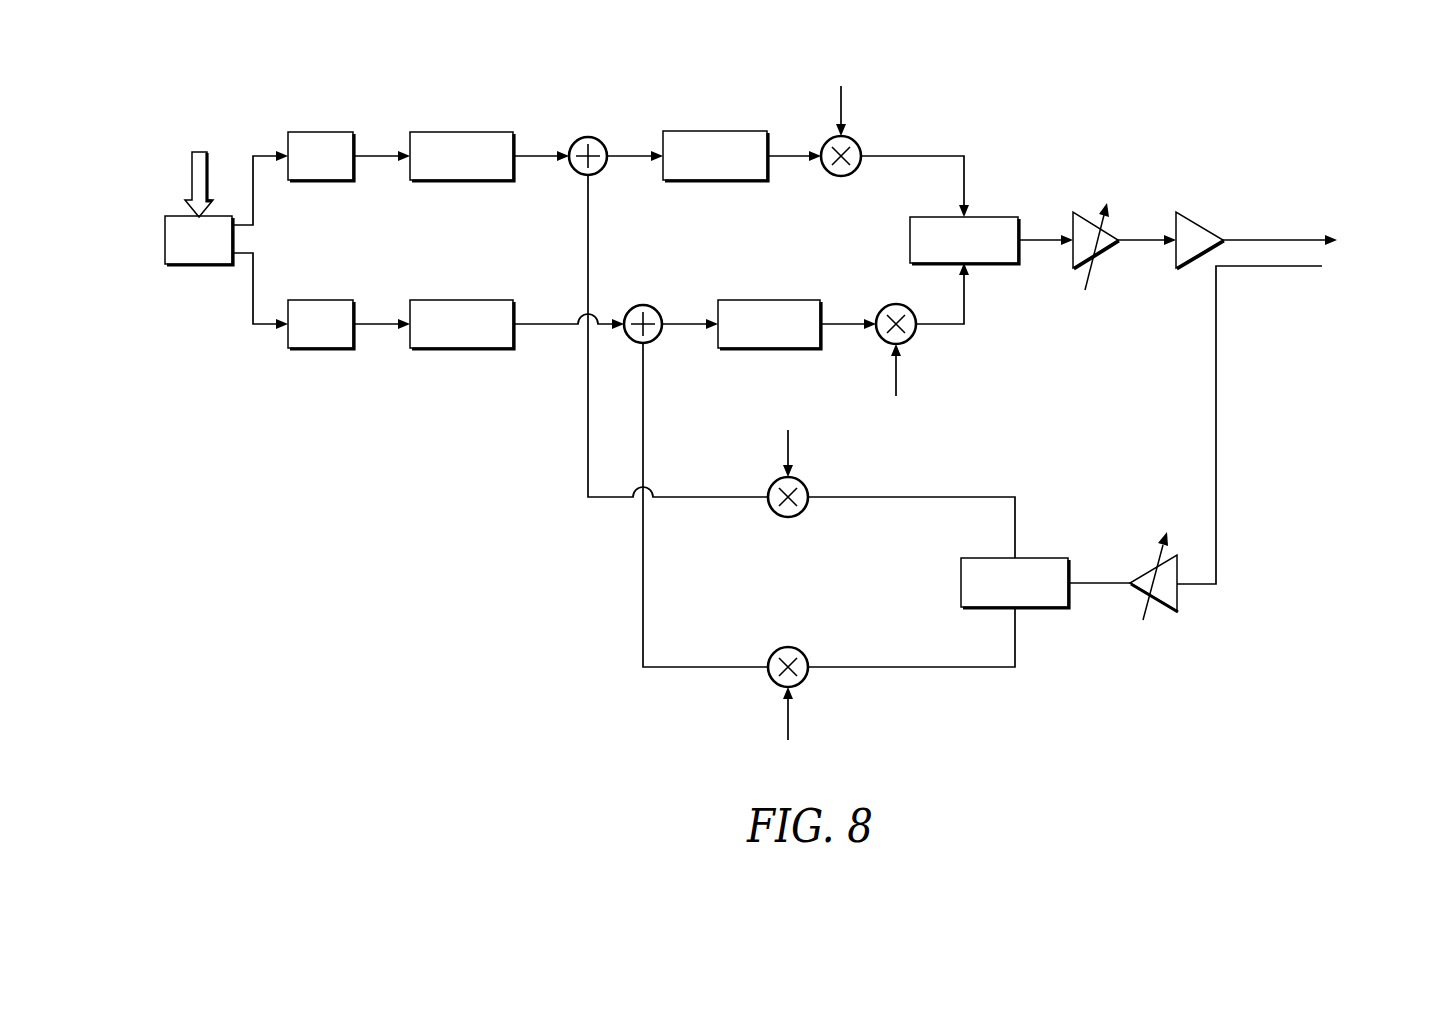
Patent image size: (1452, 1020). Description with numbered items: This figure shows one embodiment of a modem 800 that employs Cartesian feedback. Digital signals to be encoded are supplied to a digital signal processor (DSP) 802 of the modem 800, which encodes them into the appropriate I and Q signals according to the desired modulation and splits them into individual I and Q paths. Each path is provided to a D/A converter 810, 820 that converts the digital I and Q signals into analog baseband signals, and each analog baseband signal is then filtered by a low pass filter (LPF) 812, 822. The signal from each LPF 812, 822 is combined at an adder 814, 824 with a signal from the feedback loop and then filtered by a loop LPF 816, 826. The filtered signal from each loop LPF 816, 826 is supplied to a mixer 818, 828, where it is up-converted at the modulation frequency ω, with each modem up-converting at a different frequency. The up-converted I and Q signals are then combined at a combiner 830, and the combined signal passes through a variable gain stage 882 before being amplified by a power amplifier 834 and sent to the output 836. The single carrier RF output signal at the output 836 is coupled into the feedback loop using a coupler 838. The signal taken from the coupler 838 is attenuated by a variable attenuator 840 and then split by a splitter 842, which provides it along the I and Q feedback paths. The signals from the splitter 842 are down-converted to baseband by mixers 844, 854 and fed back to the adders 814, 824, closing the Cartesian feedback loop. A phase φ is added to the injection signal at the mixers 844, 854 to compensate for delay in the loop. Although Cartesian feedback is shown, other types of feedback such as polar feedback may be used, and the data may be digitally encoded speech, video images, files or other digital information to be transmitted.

The modem 800 is at (794, 410).
The digital signal processor 802 is at (199, 265).
The D/A converter 810 is at (338, 144).
The low pass filter 812 is at (479, 144).
The adder 814 is at (581, 143).
The loop low pass filter 816 is at (732, 145).
The mixer 818 is at (841, 180).
The D/A converter 820 is at (338, 312).
The low pass filter 822 is at (479, 312).
The adder 824 is at (636, 313).
The loop low pass filter 826 is at (786, 313).
The mixer 828 is at (912, 313).
The combiner 830 is at (982, 228).
The variable gain amplifier 882 is at (1093, 232).
The power amplifier 834 is at (1196, 221).
The output 836 is at (1279, 209).
The coupler 838 is at (1260, 425).
The variable attenuator 840 is at (1155, 594).
The splitter 842 is at (1033, 571).
The mixer 844 is at (788, 522).
The mixer 854 is at (788, 646).